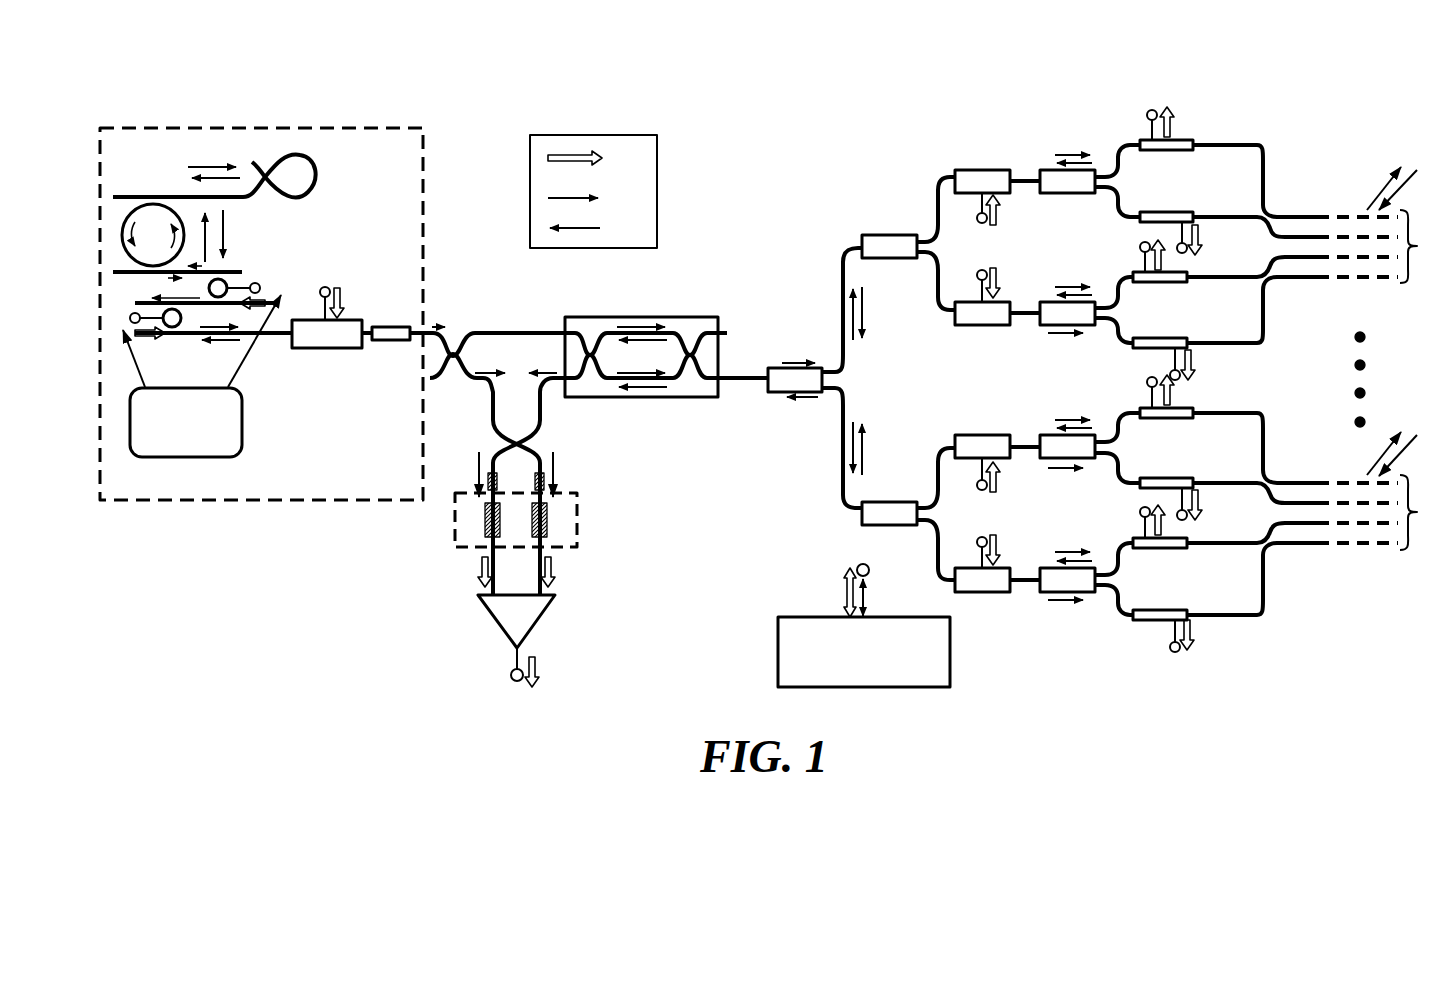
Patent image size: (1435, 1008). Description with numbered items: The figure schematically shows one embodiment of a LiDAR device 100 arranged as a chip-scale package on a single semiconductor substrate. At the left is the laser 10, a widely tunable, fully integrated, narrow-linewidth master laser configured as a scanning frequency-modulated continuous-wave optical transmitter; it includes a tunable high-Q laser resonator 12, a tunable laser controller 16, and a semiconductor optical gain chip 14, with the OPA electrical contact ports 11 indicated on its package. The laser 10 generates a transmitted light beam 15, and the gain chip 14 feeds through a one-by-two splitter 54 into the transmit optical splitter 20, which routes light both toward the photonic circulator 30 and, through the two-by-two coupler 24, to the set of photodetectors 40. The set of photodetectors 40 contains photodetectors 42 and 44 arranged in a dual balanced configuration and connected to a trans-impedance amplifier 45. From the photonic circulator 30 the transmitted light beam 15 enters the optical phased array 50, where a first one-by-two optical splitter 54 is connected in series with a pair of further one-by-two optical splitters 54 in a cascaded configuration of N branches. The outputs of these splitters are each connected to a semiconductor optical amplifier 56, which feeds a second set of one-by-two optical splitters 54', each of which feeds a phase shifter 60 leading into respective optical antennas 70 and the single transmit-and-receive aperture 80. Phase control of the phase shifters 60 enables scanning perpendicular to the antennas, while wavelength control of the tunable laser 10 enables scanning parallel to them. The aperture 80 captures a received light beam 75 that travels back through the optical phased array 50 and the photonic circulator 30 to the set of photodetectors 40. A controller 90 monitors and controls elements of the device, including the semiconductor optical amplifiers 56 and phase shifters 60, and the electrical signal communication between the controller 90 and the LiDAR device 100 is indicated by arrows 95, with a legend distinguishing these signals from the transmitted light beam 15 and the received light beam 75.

The LiDAR device 100 is at (734, 114).
The laser 10 is at (261, 314).
The OPA electrical contact ports 11 is at (362, 128).
The tunable high-Q laser resonator 12 is at (218, 237).
The semiconductor optical gain chip 14 is at (328, 350).
The tunable laser controller 16 is at (202, 376).
The transmit optical splitter 20 is at (521, 396).
The 2×2 coupler 24 is at (527, 442).
The photonic circulator 30 is at (687, 317).
The set of photodetectors 40 is at (577, 523).
The photodetector 42 is at (483, 522).
The photodetector 44 is at (548, 522).
The trans-impedance amplifier 45 is at (495, 622).
The optical phased array 50 is at (1073, 127).
The 1×2 optical splitter 54 is at (692, 378).
The second set of 1×2 optical splitters 54' is at (1081, 364).
The semiconductor optical amplifier 56 is at (965, 170).
The phase shifter 60 is at (1178, 140).
The optical antenna 70 is at (1354, 210).
The aperture 80 is at (1417, 380).
The controller 90 is at (864, 625).
The arrows 95 is at (593, 191).
The transmitted light beam 15 is at (591, 203).
The received light beam 75 is at (592, 231).